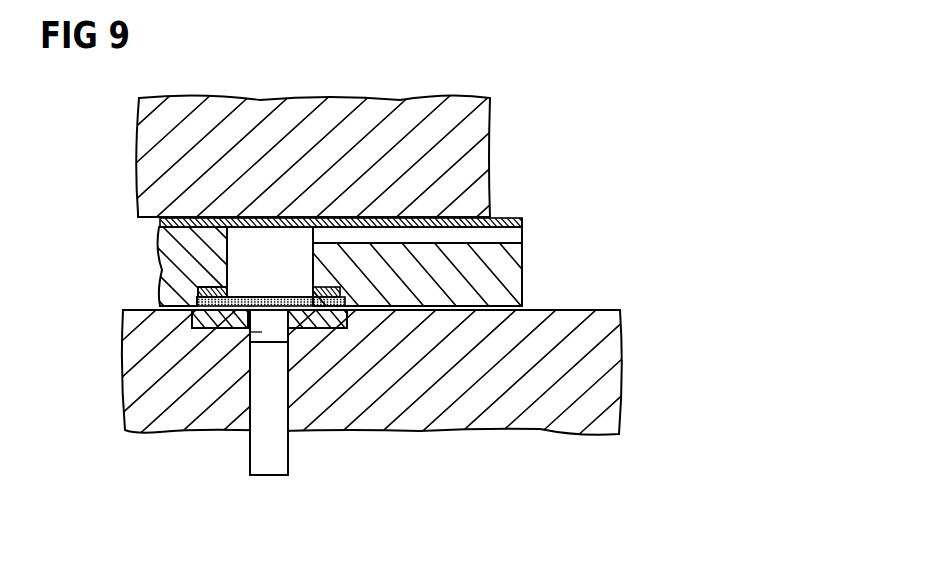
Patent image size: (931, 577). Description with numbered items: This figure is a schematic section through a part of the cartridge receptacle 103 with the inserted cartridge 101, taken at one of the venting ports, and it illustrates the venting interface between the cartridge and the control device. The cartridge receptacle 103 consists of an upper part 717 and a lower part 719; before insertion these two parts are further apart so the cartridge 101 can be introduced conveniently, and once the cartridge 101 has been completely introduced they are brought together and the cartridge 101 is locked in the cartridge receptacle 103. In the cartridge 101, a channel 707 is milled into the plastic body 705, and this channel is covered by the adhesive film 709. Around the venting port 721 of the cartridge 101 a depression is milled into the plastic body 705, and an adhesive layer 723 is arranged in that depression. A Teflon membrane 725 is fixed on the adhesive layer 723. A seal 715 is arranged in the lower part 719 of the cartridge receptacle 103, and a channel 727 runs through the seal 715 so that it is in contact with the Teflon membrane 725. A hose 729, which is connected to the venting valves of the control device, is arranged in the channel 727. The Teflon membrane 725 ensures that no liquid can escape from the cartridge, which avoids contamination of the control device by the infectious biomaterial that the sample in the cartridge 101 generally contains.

The cartridge 101 is at (379, 363).
The cartridge receptacle 103 is at (305, 138).
The plastic body 705 is at (512, 268).
The channel 707 is at (512, 238).
The adhesive film 709 is at (522, 222).
The seal 715 is at (340, 333).
The upper part 717 is at (338, 110).
The lower part 719 is at (133, 357).
The venting port 721 is at (281, 293).
The adhesive layer 723 is at (200, 290).
The Teflon membrane 725 is at (197, 302).
The channel 727 is at (250, 333).
The hose 729 is at (272, 465).